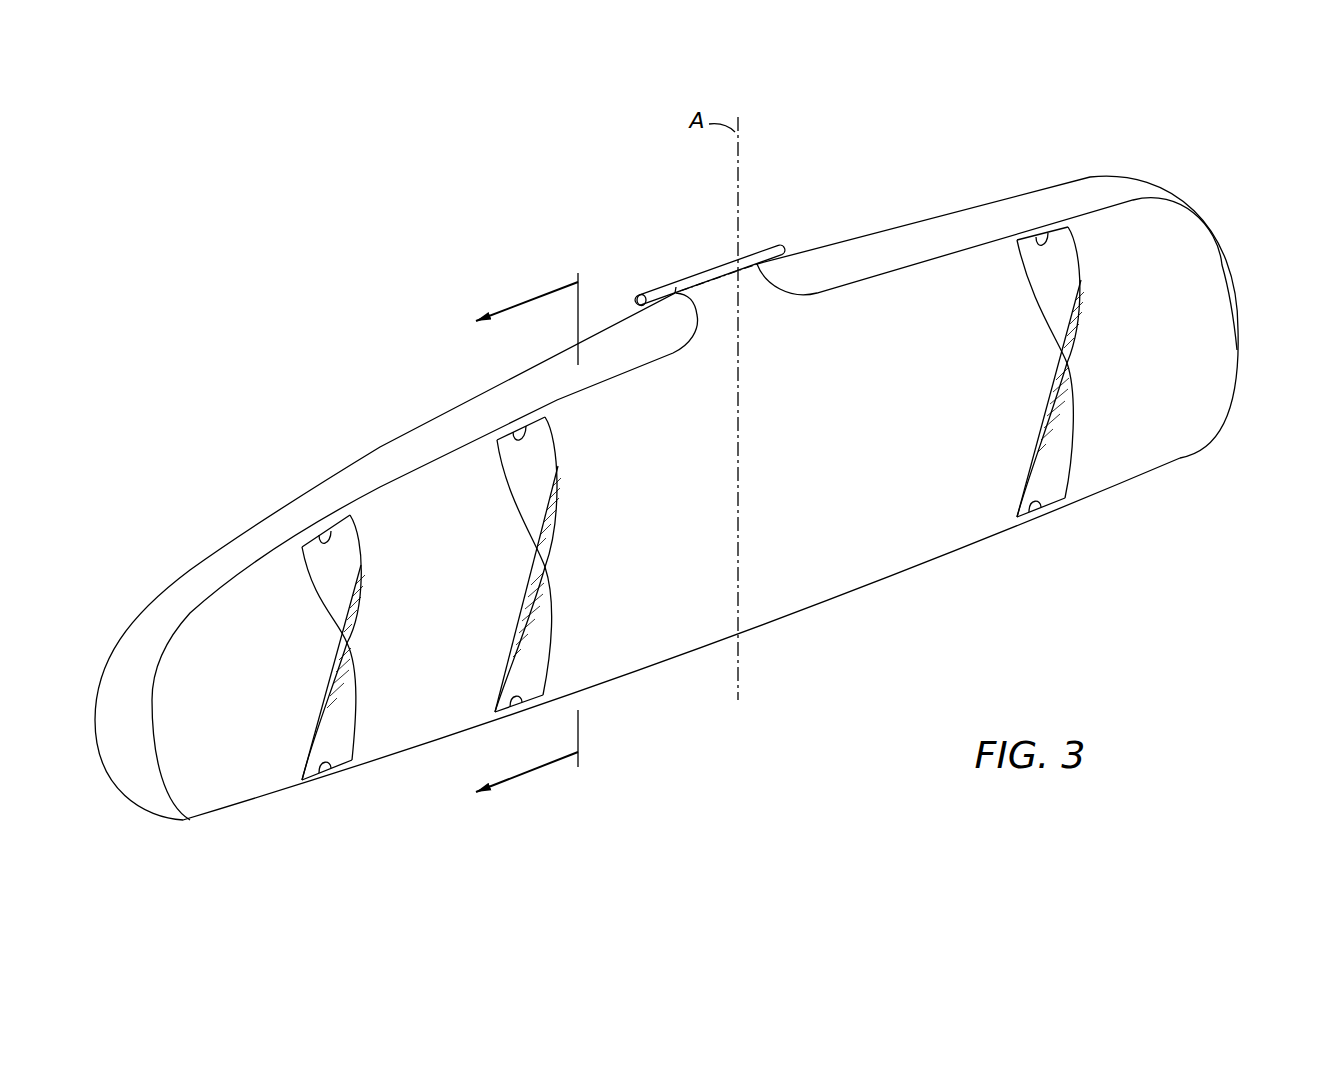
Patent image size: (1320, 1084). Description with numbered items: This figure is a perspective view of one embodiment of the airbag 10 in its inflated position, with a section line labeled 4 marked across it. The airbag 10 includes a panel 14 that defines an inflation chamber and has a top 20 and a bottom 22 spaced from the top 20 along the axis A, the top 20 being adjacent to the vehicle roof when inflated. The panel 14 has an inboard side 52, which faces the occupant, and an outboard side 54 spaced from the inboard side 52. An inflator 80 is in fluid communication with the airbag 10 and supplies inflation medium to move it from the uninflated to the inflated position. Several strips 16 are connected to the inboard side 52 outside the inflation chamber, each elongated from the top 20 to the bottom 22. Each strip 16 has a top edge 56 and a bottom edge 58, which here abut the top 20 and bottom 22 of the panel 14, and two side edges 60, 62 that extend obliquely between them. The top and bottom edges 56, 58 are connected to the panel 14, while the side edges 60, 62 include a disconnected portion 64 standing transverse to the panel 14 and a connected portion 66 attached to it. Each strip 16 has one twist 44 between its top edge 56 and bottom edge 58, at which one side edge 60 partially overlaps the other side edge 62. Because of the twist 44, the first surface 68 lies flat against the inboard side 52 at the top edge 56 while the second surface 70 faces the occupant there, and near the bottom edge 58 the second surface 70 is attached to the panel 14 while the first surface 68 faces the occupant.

The airbag 10 is at (138, 360).
The panel 14 is at (1195, 343).
The strip 16 is at (373, 566).
The top 20 is at (180, 608).
The bottom 22 is at (243, 808).
The twist 44 is at (355, 644).
The inboard side 52 is at (937, 258).
The outboard side 54 is at (882, 232).
The top edge 56 is at (328, 535).
The bottom edge 58 is at (324, 768).
The side edge 60 is at (306, 575).
The side edge 62 is at (313, 748).
The disconnected portion 64 is at (323, 631).
The connected portion 66 is at (299, 562).
The first surface 68 is at (321, 752).
The second surface 70 is at (321, 574).
The inflator 80 is at (707, 280).
The section line 4- 4 is at (531, 521).